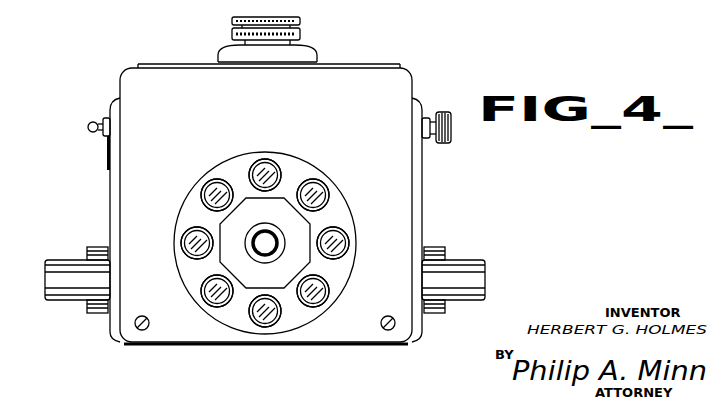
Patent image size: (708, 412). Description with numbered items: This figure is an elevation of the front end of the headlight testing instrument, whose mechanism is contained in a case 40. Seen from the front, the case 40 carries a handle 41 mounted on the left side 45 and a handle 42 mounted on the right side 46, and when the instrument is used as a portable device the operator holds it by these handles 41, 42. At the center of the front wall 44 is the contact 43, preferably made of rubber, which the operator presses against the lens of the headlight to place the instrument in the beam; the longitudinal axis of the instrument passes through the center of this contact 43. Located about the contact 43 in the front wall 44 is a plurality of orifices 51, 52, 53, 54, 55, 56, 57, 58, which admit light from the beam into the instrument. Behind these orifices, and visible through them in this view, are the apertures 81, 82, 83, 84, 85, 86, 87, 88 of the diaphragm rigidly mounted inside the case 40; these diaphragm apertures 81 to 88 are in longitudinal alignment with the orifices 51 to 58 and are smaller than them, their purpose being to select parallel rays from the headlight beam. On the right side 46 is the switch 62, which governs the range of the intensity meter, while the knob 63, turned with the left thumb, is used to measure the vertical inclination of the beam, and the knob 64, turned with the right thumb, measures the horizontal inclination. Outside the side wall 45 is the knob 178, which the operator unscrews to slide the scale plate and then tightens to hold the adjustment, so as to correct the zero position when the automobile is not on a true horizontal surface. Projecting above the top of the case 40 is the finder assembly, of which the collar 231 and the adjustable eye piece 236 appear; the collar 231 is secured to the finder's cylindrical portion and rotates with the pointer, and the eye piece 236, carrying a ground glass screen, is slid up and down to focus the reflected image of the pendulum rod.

The case 40 is at (412, 84).
The handle 41 is at (485, 266).
The handle 42 is at (60, 262).
The contact 43 is at (271, 240).
The front wall 44 is at (380, 143).
The left side 45 is at (422, 200).
The right side 46 is at (110, 198).
The orifice 51 is at (270, 159).
The orifice 52 is at (327, 189).
The orifice 53 is at (349, 243).
The orifice 54 is at (326, 294).
The orifice 55 is at (280, 319).
The orifice 56 is at (205, 296).
The orifice 57 is at (181, 243).
The orifice 58 is at (206, 189).
The switch 62 is at (88, 127).
The knob 63 is at (438, 248).
The knob 64 is at (92, 247).
The diaphragm aperture 81 is at (281, 171).
The diaphragm aperture 82 is at (329, 200).
The diaphragm aperture 83 is at (345, 252).
The diaphragm aperture 84 is at (320, 302).
The diaphragm aperture 85 is at (268, 327).
The diaphragm aperture 86 is at (214, 302).
The diaphragm aperture 87 is at (186, 252).
The diaphragm aperture 88 is at (210, 200).
The knob 178 is at (450, 141).
The collar 231 is at (301, 36).
The eye piece 236 is at (301, 20).